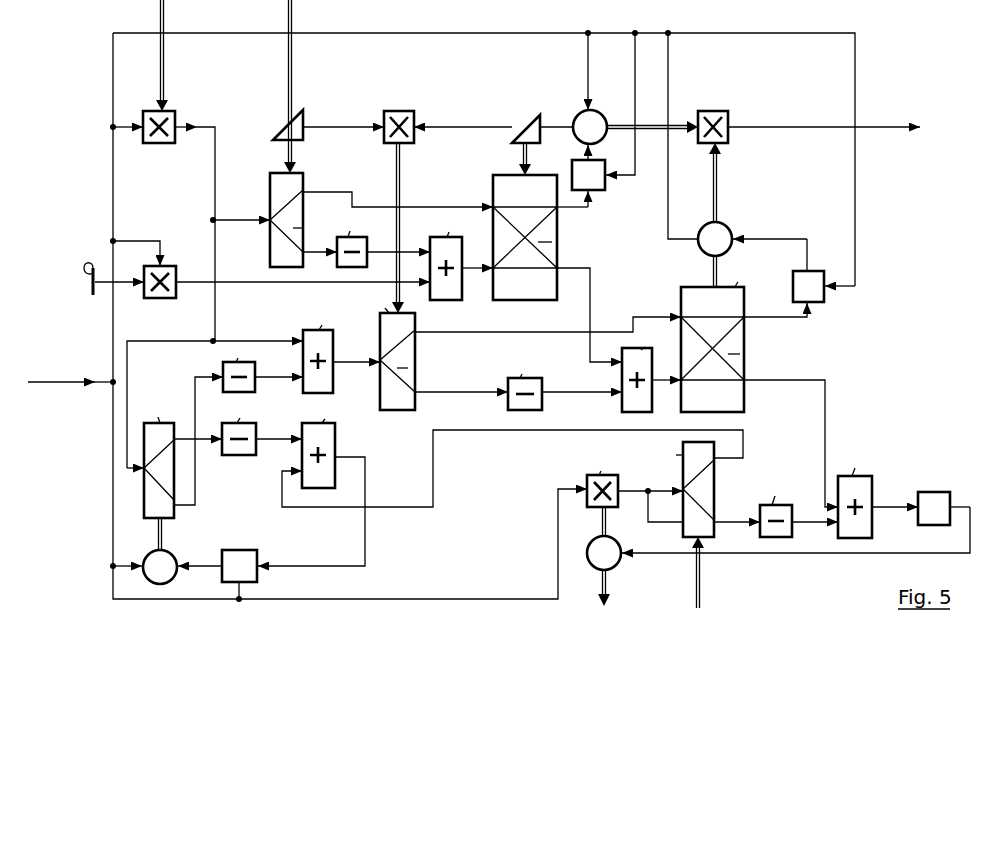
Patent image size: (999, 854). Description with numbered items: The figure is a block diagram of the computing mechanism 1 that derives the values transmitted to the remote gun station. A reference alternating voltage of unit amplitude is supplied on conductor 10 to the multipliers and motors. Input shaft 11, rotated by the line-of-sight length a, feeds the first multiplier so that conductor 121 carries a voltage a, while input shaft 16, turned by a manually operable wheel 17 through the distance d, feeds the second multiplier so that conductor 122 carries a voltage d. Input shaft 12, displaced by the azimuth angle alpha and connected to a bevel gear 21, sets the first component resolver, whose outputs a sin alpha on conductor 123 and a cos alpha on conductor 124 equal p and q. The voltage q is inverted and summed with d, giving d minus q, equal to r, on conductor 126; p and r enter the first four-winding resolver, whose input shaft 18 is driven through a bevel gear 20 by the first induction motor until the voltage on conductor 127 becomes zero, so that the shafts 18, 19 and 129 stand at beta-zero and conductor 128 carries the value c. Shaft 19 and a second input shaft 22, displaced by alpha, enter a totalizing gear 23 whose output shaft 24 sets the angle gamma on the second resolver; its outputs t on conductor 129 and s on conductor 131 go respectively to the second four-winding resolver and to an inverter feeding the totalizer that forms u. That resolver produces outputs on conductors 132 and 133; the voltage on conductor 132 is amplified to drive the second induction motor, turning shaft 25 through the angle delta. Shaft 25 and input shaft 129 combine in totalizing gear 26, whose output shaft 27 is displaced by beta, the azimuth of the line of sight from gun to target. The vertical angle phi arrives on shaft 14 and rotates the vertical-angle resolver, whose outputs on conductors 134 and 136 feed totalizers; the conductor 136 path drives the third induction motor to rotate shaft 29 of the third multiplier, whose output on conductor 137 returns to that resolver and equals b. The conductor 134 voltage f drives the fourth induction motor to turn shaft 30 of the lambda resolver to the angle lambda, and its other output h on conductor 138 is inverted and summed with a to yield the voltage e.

The computing circuit 1 is at (62, 398).
The conductor 10 is at (503, 34).
The input shaft 11 is at (164, 22).
The input shaft 12 is at (293, 22).
The shaft 14 is at (695, 592).
The input shaft 16 is at (126, 284).
The manually operable wheel 17 is at (92, 290).
The input shaft 18 is at (528, 166).
The shaft 19 is at (479, 126).
The bevel gear 20 is at (528, 116).
The bevel gear 21 is at (278, 127).
The input shaft 22 is at (339, 125).
The totalizing gear 23 is at (399, 110).
The output shaft 24 is at (399, 172).
The shaft 25 is at (718, 197).
The totalizing gear 26 is at (712, 110).
The output shaft 27 is at (788, 126).
The shaft 29 is at (600, 587).
The shaft 30 is at (164, 545).
The conductor 121 is at (214, 157).
The conductor 122 is at (303, 273).
The conductor 123 is at (398, 197).
The conductor 124 is at (320, 255).
The conductor 126 is at (479, 273).
The conductor 127 is at (591, 209).
The conductor 128 is at (592, 297).
The conductor 129 is at (656, 130).
The conductor 131 is at (441, 394).
The conductor 132 is at (764, 318).
The conductor 133 is at (784, 383).
The conductor 134 is at (435, 479).
The conductor 136 is at (727, 528).
The conductor 137 is at (640, 492).
The conductor 138 is at (194, 497).